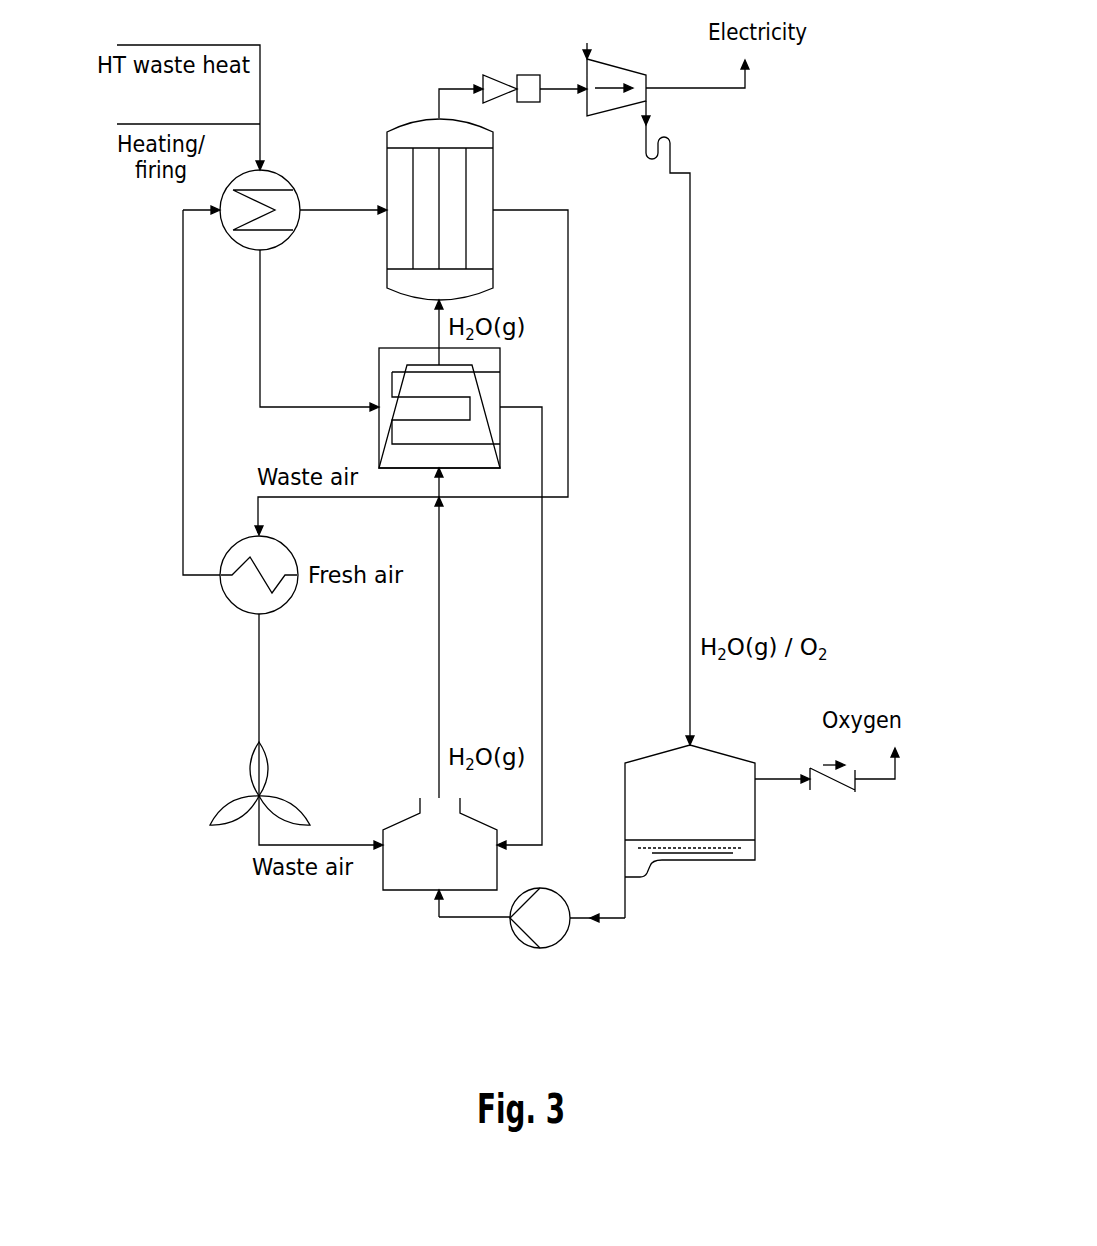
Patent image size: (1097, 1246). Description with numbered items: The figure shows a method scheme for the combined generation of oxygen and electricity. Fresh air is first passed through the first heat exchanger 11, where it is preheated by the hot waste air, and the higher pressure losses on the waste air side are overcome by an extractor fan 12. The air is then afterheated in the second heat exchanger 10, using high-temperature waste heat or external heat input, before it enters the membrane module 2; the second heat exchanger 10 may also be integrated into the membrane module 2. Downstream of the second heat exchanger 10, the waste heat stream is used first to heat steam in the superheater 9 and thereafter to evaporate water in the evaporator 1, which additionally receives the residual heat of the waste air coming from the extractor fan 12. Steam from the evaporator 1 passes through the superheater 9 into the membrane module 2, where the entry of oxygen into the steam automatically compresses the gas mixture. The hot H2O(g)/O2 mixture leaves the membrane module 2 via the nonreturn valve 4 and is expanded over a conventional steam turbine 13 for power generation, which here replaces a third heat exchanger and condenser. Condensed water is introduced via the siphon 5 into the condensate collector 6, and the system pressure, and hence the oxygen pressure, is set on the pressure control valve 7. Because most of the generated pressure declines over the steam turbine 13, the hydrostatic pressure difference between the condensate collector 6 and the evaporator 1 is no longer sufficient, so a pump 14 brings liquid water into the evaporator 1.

The evaporator 1 is at (410, 890).
The membrane module 2 is at (392, 130).
The nonreturn valve 4 is at (516, 77).
The siphon 5 is at (678, 143).
The condensate collector 6 is at (715, 862).
The pressure control valve 7 is at (833, 792).
The superheater 9 is at (378, 375).
The second heat exchanger 10 is at (285, 245).
The first heat exchanger 11 is at (287, 603).
The extractor fan 12 is at (262, 791).
The steam turbine 13 is at (612, 63).
The pump 14 is at (518, 942).